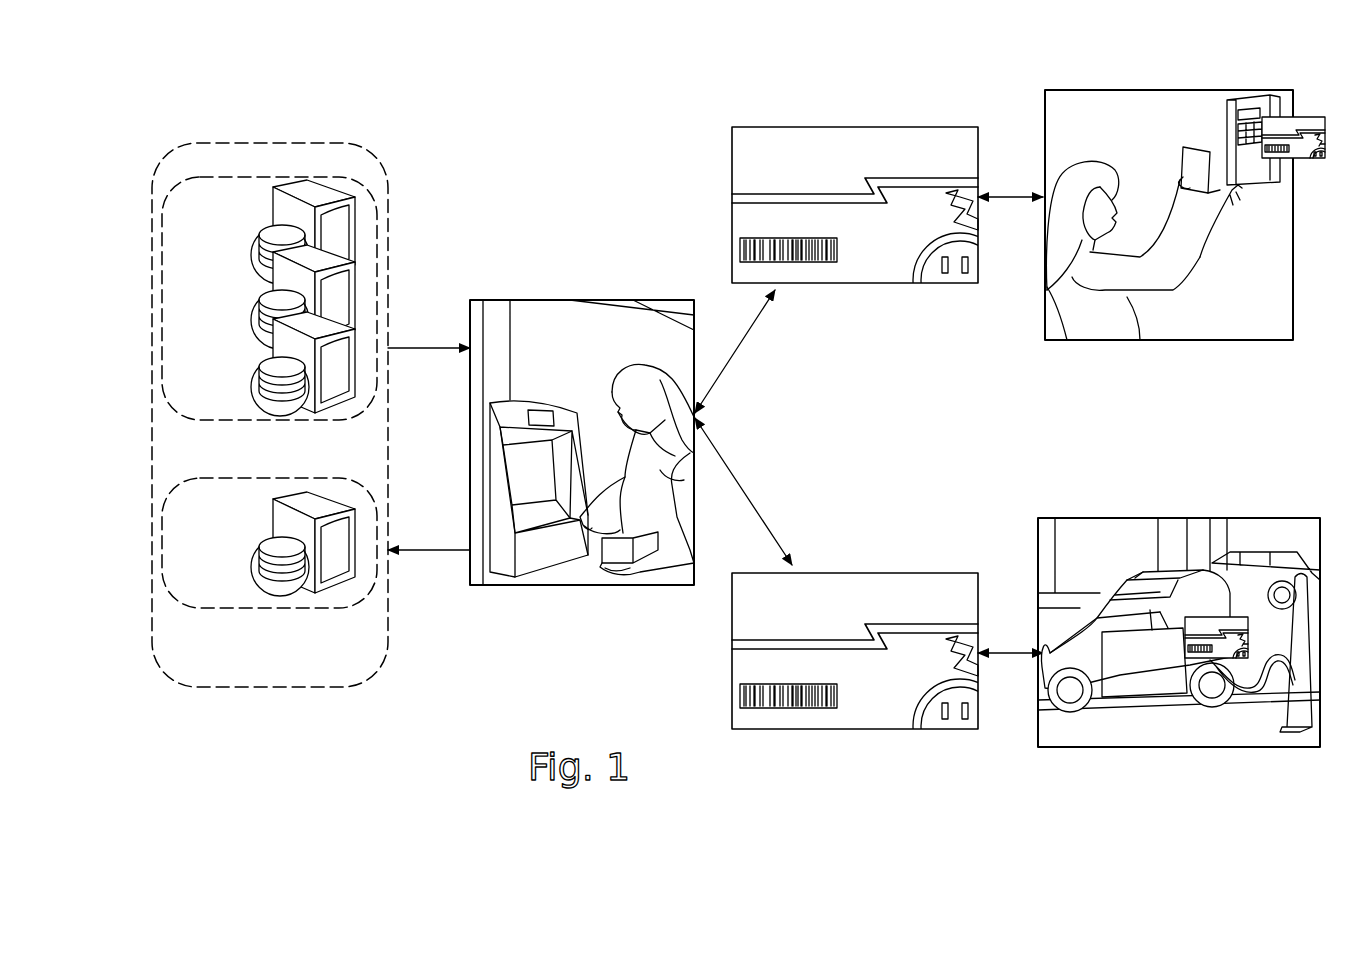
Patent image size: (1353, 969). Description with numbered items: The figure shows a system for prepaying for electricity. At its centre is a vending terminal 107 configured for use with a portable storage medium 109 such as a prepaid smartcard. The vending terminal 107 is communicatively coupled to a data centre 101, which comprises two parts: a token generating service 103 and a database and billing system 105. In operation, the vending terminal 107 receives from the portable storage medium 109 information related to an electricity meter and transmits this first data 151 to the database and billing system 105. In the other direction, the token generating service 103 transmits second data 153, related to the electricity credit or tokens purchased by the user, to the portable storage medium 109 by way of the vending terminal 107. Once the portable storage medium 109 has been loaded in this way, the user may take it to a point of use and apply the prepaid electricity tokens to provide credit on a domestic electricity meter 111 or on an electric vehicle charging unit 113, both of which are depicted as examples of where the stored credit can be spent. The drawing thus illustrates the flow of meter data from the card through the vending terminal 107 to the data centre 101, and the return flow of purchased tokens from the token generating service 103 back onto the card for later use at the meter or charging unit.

The data centre 101 is at (195, 142).
The token generating service 103 is at (277, 183).
The database and billing system 105 is at (225, 610).
The vending terminal 107 is at (543, 553).
The portable storage medium 109 is at (843, 152).
The domestic electricity meter 111 is at (1255, 108).
The electric vehicle charging unit 113 is at (1297, 580).
The first data 151 is at (429, 537).
The second data 153 is at (429, 335).